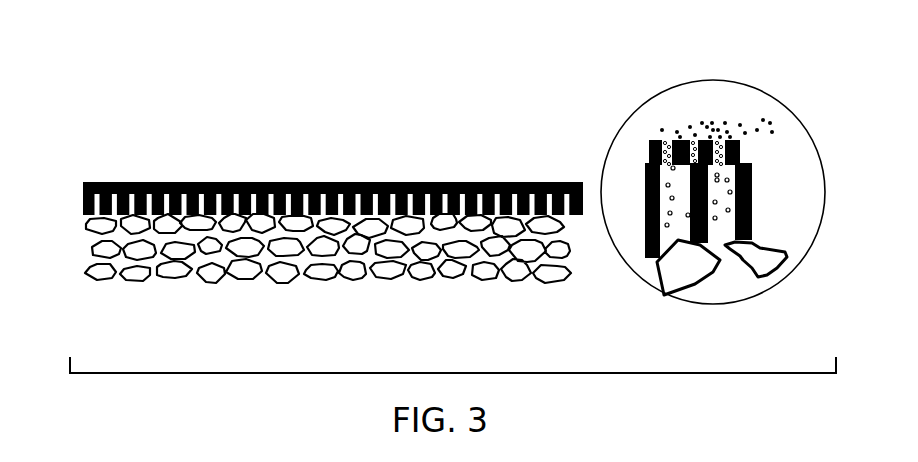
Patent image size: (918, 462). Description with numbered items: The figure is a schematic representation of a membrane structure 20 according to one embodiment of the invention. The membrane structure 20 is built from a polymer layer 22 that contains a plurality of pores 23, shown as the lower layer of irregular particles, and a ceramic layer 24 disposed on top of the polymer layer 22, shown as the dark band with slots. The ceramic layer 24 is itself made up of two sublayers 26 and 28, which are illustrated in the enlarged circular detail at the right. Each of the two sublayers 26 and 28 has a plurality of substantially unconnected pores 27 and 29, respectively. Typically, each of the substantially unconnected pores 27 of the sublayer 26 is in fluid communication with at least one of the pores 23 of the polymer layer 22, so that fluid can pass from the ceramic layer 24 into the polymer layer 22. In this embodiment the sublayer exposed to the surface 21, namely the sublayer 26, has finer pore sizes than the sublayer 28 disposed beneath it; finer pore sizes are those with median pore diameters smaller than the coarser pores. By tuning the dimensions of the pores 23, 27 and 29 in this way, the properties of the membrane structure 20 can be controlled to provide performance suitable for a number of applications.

The membrane structure 20 is at (224, 30).
The surface 21 is at (653, 139).
The polymer layer 22 is at (82, 228).
The pores 23 is at (375, 237).
The ceramic layer 24 is at (82, 183).
The sublayer 26 is at (742, 152).
The substantially unconnected pores 27 is at (693, 140).
The sublayer 28 is at (757, 192).
The substantially unconnected pores 29 is at (712, 222).